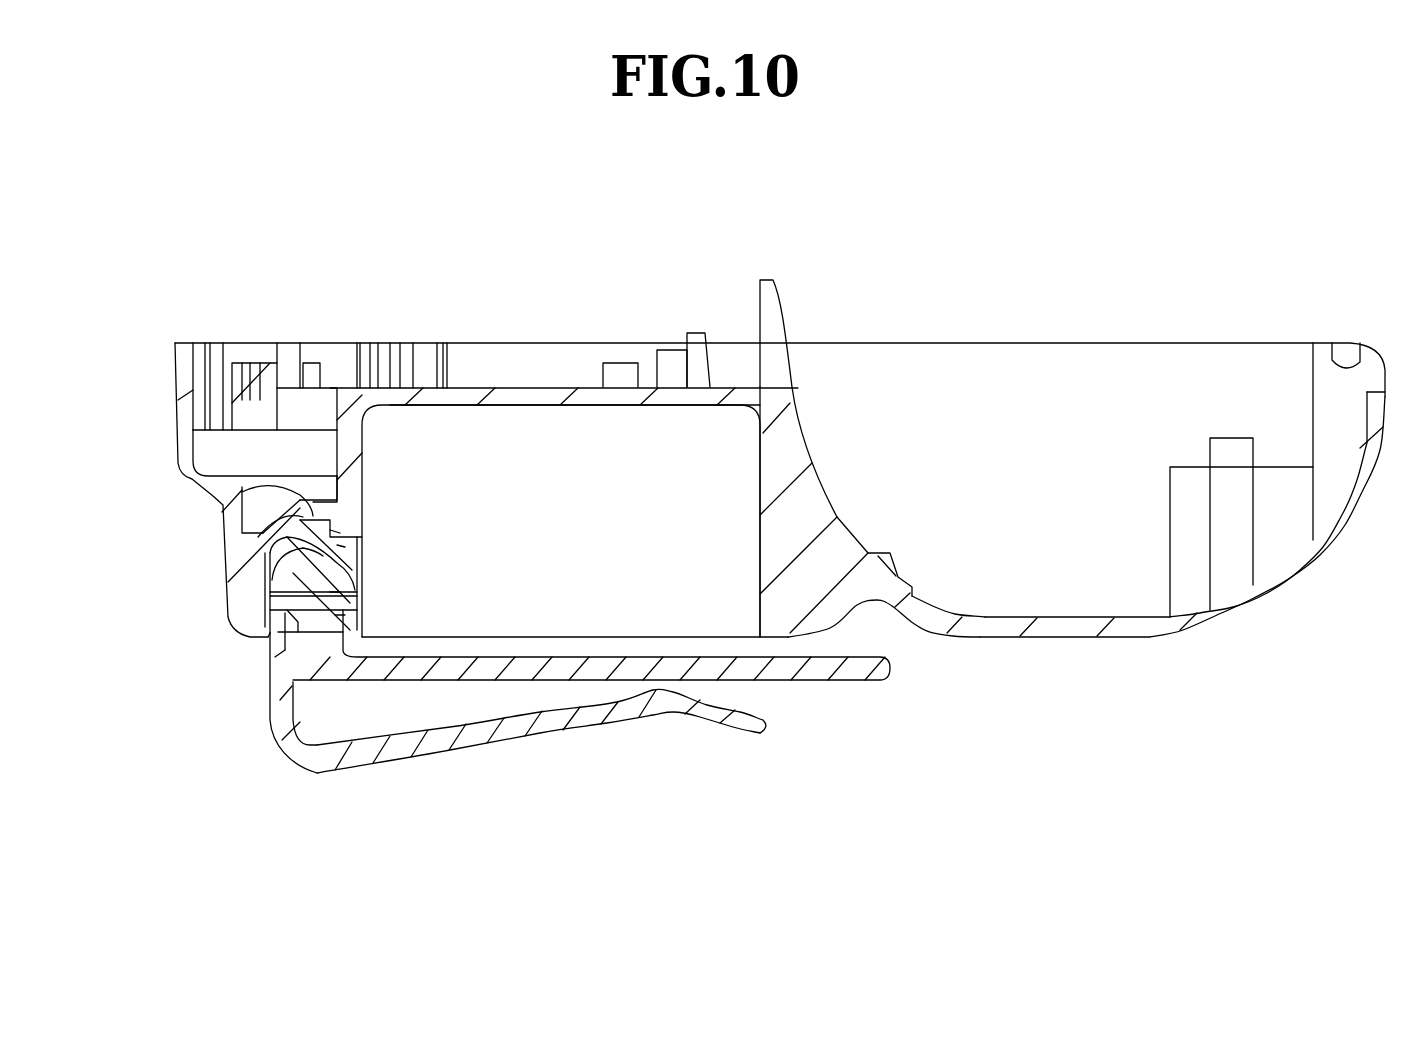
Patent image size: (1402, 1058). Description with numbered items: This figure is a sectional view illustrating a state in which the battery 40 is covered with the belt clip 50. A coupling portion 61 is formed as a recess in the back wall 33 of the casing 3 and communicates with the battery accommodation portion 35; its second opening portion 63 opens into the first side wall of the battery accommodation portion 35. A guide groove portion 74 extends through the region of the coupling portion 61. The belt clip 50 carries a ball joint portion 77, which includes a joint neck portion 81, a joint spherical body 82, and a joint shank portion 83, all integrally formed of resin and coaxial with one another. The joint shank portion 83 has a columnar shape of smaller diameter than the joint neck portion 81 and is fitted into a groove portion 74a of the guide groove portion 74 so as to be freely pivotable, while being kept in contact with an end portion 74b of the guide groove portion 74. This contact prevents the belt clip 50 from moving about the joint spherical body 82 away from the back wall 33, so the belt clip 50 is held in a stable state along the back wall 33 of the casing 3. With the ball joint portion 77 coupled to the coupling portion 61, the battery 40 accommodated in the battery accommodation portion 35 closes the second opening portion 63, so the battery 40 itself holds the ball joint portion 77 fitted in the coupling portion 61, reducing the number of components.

The casing 3 is at (250, 649).
The back wall 33 is at (831, 628).
The battery accommodation portion 35 is at (760, 487).
The battery 40 is at (547, 453).
The belt clip 50 is at (368, 768).
The coupling portion 61 is at (340, 592).
The second opening portion 63 is at (340, 533).
The guide groove portion 74 is at (345, 615).
The groove portion 74a is at (345, 547).
The end portion 74b is at (330, 524).
The ball joint portion 77 is at (92, 488).
The joint neck portion 81 is at (260, 630).
The joint spherical body 82 is at (303, 572).
The joint shank portion 83 is at (242, 490).